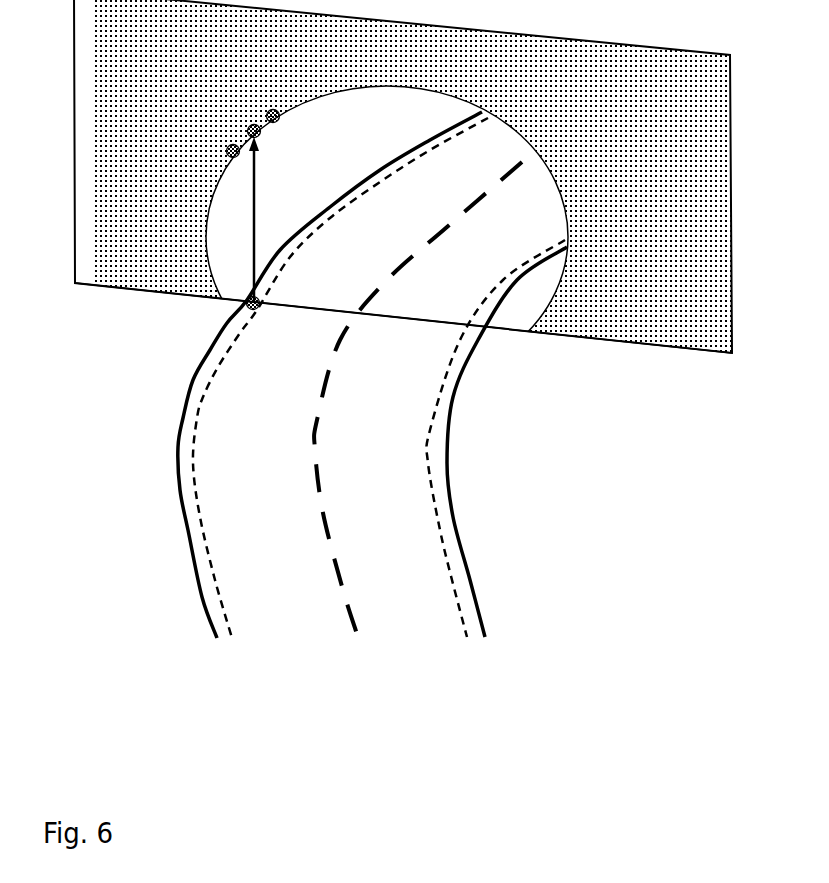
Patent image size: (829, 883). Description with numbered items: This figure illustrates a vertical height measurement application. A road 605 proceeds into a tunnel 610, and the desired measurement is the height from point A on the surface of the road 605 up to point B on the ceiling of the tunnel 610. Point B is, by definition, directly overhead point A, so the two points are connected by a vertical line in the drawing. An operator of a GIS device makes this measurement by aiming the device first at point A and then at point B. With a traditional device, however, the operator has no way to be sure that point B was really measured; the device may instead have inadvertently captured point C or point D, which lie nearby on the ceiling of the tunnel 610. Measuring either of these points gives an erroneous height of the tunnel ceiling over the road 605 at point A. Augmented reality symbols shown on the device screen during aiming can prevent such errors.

The road 605 is at (295, 598).
The tunnel 610 is at (662, 113).
The point A is at (259, 237).
The point B is at (246, 121).
The point C is at (223, 144).
The point D is at (272, 103).